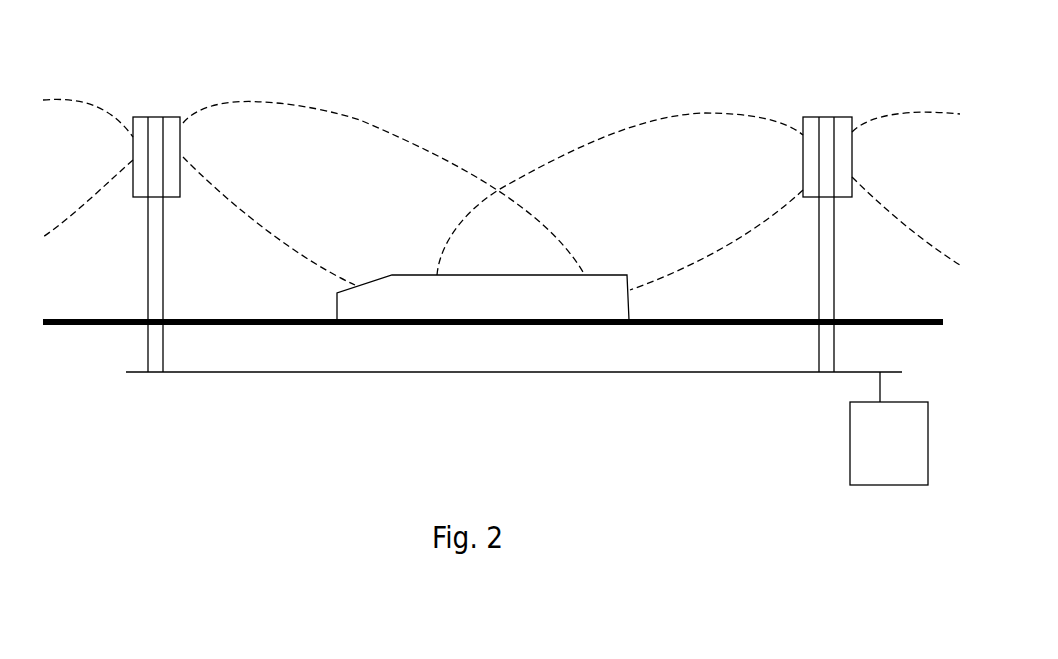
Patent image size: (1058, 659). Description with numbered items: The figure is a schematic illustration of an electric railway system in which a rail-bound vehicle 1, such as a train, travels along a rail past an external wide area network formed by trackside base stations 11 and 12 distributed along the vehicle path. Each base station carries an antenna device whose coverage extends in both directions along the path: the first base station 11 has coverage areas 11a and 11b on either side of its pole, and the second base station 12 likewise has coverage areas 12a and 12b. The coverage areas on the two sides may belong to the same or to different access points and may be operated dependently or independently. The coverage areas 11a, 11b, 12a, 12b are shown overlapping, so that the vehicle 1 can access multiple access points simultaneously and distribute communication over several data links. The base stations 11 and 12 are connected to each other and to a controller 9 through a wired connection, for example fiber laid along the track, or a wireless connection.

The rail-bound vehicle 1 is at (603, 303).
The controller 9 is at (850, 451).
The trackside base station 11 is at (157, 120).
The coverage area 11a is at (58, 98).
The coverage area 11b is at (355, 118).
The trackside base station 12 is at (822, 117).
The coverage area 12a is at (705, 110).
The coverage area 12b is at (933, 110).